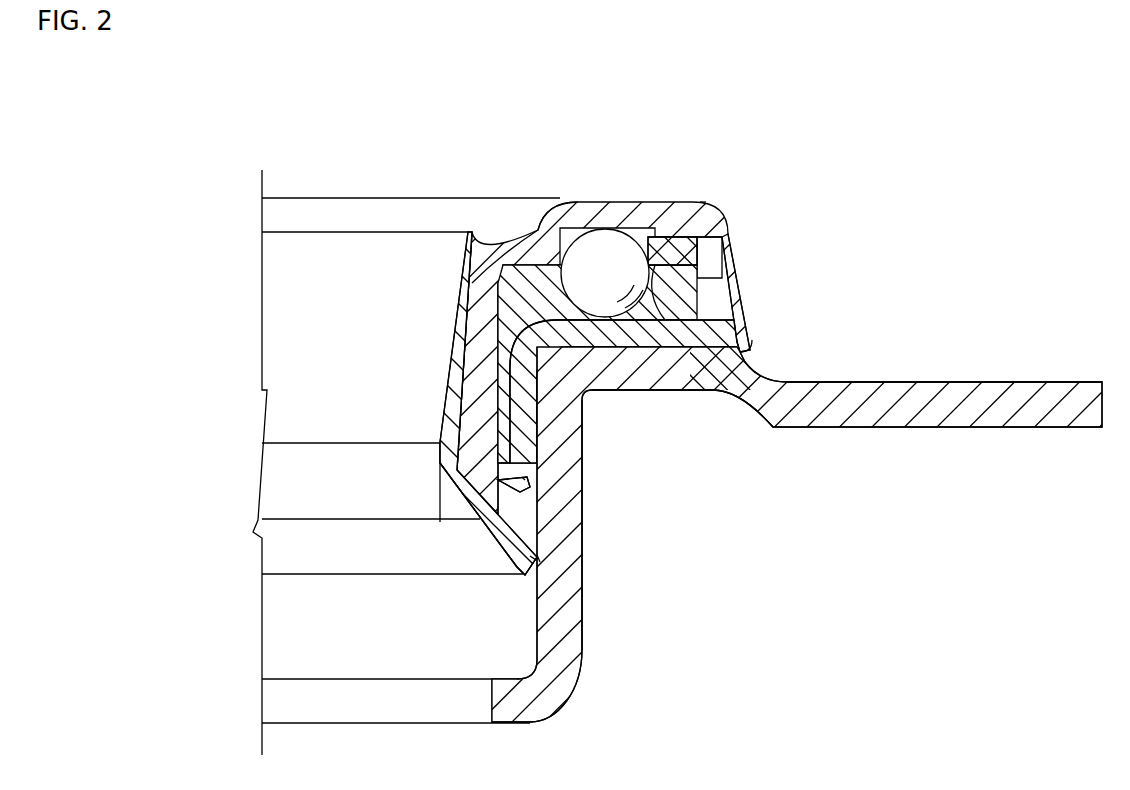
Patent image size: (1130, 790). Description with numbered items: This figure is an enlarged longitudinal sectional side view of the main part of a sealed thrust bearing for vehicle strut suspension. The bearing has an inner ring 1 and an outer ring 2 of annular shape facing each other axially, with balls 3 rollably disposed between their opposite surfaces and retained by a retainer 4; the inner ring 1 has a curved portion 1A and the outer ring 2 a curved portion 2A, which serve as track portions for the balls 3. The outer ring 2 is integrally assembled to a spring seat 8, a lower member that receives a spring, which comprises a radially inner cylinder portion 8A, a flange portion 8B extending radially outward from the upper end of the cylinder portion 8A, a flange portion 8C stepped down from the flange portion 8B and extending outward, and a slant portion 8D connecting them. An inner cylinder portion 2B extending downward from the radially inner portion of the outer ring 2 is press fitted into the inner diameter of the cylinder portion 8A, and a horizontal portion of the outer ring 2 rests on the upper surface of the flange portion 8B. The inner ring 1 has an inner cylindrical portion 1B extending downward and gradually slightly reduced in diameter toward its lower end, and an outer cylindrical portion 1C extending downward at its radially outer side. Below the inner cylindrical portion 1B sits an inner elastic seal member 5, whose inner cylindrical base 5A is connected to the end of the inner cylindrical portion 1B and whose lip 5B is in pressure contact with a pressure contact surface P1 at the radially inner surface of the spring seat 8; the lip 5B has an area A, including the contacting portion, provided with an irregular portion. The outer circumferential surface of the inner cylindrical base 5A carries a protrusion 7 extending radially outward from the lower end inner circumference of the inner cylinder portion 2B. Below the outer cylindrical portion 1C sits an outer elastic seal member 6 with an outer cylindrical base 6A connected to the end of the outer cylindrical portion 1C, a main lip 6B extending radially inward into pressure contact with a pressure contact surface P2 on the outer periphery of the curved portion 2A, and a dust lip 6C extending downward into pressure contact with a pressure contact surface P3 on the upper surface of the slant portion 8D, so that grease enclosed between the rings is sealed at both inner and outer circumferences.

The inner ring 1 is at (565, 400).
The curved portion 1A is at (548, 205).
The inner cylindrical portion 1B is at (470, 286).
The outer cylindrical portion 1C is at (722, 238).
The outer ring 2 is at (630, 295).
The curved portion 2A is at (676, 323).
The inner cylinder portion 2B is at (540, 437).
The ball 3 is at (605, 248).
The retainer 4 is at (661, 232).
The inner elastic seal member 5 is at (585, 413).
The inner cylindrical base 5A is at (463, 489).
The lip 5B is at (500, 542).
The outer elastic seal member 6 is at (630, 343).
The outer cylindrical base 6A is at (746, 276).
The main lip 6B is at (722, 395).
The dust lip 6C is at (756, 352).
The protrusion 7 is at (522, 490).
The spring seat 8 is at (565, 462).
The cylinder portion 8A is at (578, 604).
The flange portion 8B is at (675, 398).
The flange portion 8C is at (995, 388).
The slant portion 8D is at (740, 415).
The area A is at (533, 557).
The pressure contact surface P1 is at (541, 563).
The pressure contact surface P2 is at (703, 200).
The pressure contact surface P3 is at (790, 383).